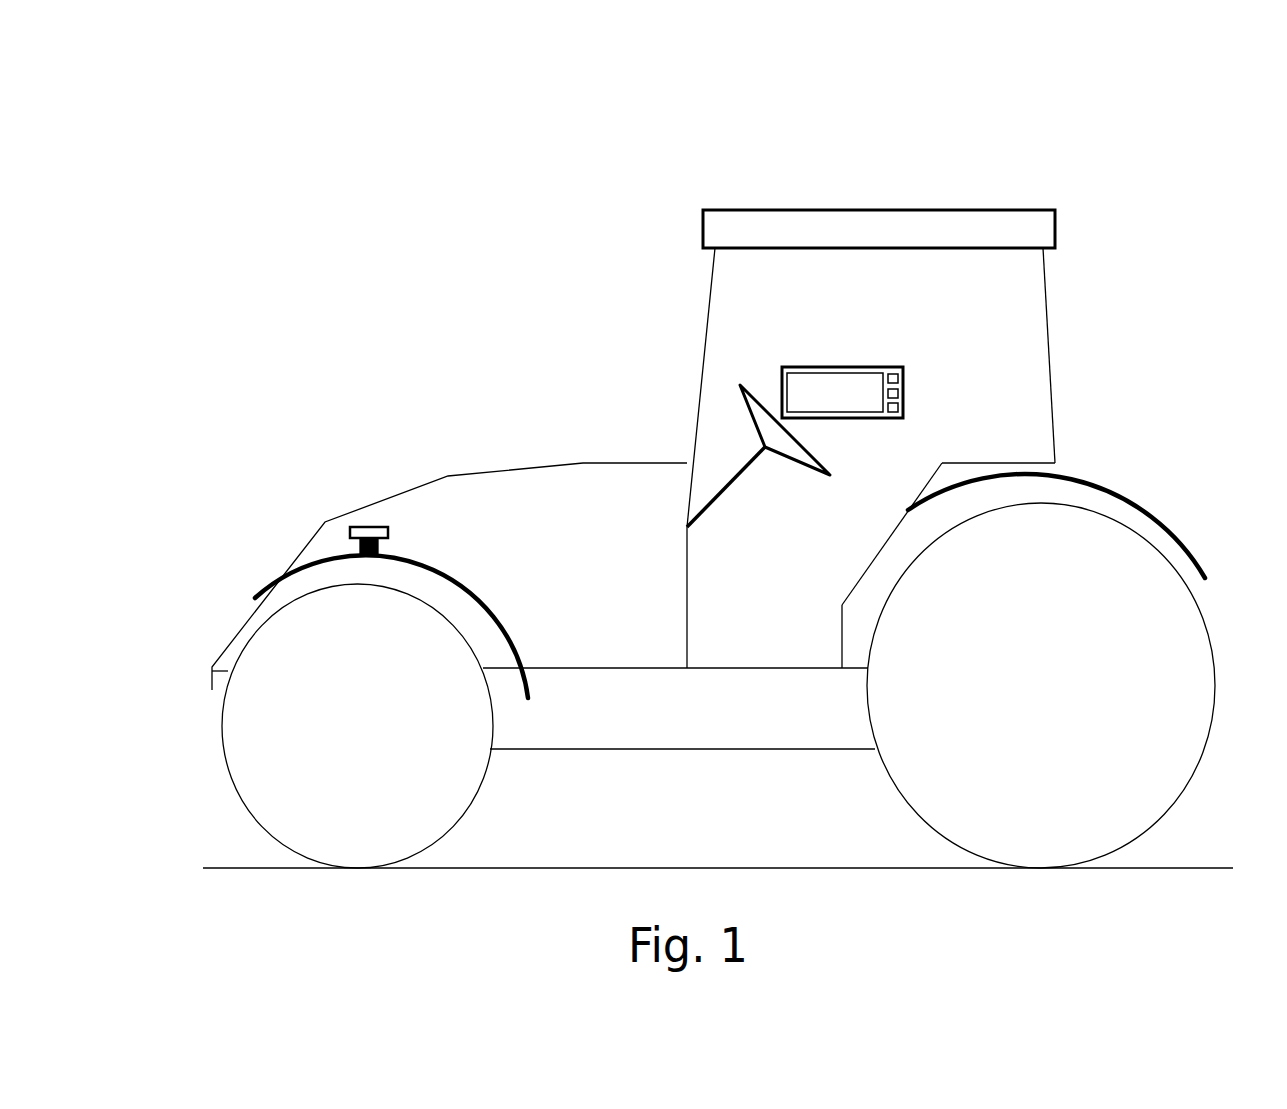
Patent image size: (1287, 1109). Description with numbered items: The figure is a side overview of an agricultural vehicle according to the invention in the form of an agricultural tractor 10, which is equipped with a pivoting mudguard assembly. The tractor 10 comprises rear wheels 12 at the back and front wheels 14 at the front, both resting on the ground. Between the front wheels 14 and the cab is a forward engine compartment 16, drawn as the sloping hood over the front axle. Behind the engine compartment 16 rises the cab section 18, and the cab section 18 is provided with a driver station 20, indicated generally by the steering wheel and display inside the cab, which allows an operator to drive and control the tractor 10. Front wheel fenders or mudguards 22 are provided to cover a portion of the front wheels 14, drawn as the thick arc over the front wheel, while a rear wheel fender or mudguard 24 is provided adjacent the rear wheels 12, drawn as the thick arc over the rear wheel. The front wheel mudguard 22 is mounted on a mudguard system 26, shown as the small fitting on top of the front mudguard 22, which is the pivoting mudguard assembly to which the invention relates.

The agricultural tractor 10 is at (295, 226).
The rear wheels 12 is at (1075, 820).
The front wheels 14 is at (348, 845).
The forward engine compartment 16 is at (565, 490).
The cab section 18 is at (998, 326).
The driver station 20 is at (668, 351).
The front wheel mudguard 22 is at (280, 577).
The rear wheel mudguard 24 is at (1135, 497).
The mudguard system 26 is at (363, 527).